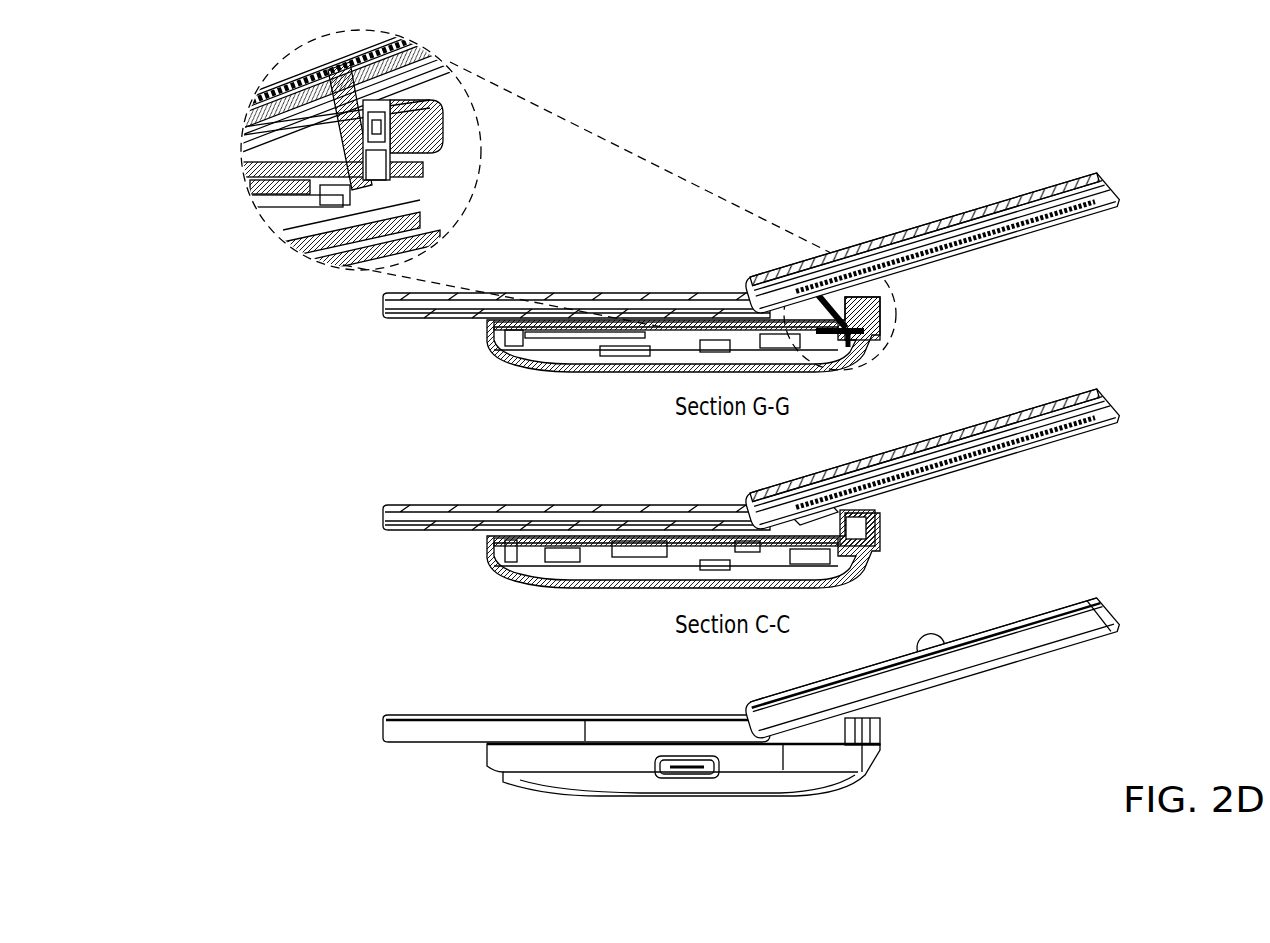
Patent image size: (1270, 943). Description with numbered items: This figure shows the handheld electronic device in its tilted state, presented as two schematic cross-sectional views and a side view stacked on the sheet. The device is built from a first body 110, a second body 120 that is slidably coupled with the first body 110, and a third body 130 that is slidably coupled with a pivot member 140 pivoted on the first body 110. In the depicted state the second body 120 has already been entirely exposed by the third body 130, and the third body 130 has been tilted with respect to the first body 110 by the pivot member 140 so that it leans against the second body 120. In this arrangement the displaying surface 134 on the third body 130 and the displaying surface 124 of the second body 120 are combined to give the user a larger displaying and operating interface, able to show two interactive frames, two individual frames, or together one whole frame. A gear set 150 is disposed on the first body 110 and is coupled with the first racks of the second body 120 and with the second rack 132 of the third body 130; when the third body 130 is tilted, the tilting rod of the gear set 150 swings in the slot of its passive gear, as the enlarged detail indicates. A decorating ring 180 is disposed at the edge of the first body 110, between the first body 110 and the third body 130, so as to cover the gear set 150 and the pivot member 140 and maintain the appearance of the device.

The first body 110 is at (487, 337).
The second body 120 is at (383, 305).
The displaying surface 124 is at (648, 288).
The third body 130 is at (1105, 178).
The second rack 132 is at (960, 247).
The displaying surface 134 is at (1046, 187).
The pivot member 140 is at (818, 503).
The gear set 150 is at (705, 372).
The decorating ring 180 is at (873, 312).